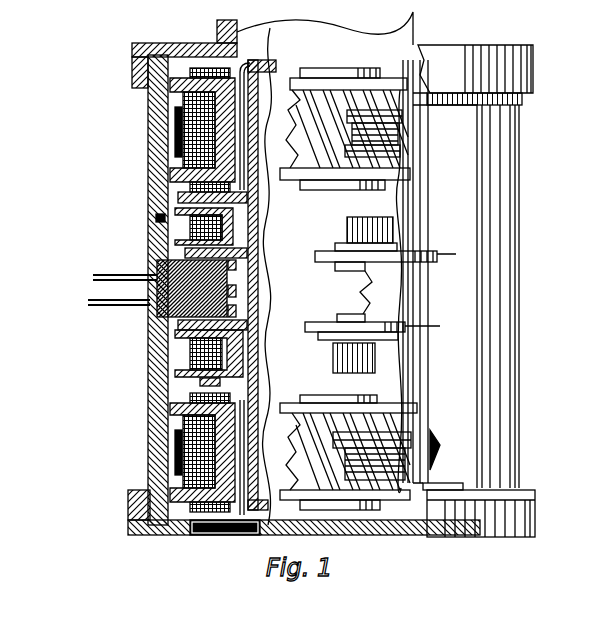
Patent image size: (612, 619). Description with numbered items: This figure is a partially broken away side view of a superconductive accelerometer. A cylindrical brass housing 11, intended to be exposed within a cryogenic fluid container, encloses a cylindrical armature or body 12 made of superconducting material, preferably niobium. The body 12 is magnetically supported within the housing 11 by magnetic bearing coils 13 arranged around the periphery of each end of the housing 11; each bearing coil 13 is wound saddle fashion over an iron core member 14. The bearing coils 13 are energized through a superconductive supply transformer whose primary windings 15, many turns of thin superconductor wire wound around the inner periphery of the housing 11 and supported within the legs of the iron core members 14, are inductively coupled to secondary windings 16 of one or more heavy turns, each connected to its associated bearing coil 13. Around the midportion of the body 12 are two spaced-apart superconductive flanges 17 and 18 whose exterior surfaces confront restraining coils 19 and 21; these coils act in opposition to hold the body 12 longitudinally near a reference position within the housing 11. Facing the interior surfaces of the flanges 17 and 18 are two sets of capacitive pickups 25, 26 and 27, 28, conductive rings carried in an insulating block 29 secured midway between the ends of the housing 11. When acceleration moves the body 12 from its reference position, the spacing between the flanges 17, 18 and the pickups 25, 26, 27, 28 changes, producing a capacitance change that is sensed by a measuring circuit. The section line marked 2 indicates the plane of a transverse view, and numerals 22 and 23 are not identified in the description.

The section line 2- 2 is at (80, 55).
The housing 11 is at (455, 62).
The armature or body 12 is at (253, 508).
The magnetic bearing coils 13 is at (243, 78).
The iron core member 14 is at (180, 70).
The primary windings 15 is at (183, 100).
The secondary winding 16 is at (378, 140).
The flange 17 is at (168, 258).
The flange 18 is at (178, 342).
The restraining coil 19 is at (160, 218).
The restraining coil 21 is at (243, 362).
The spacer bar 22 is at (178, 198).
The stop block 23 is at (216, 388).
The capacitive pickup 25 is at (180, 265).
The capacitive pickup 26 is at (236, 256).
The capacitive pickup 27 is at (178, 326).
The capacitive pickup 28 is at (236, 320).
The insulating block 29 is at (236, 278).